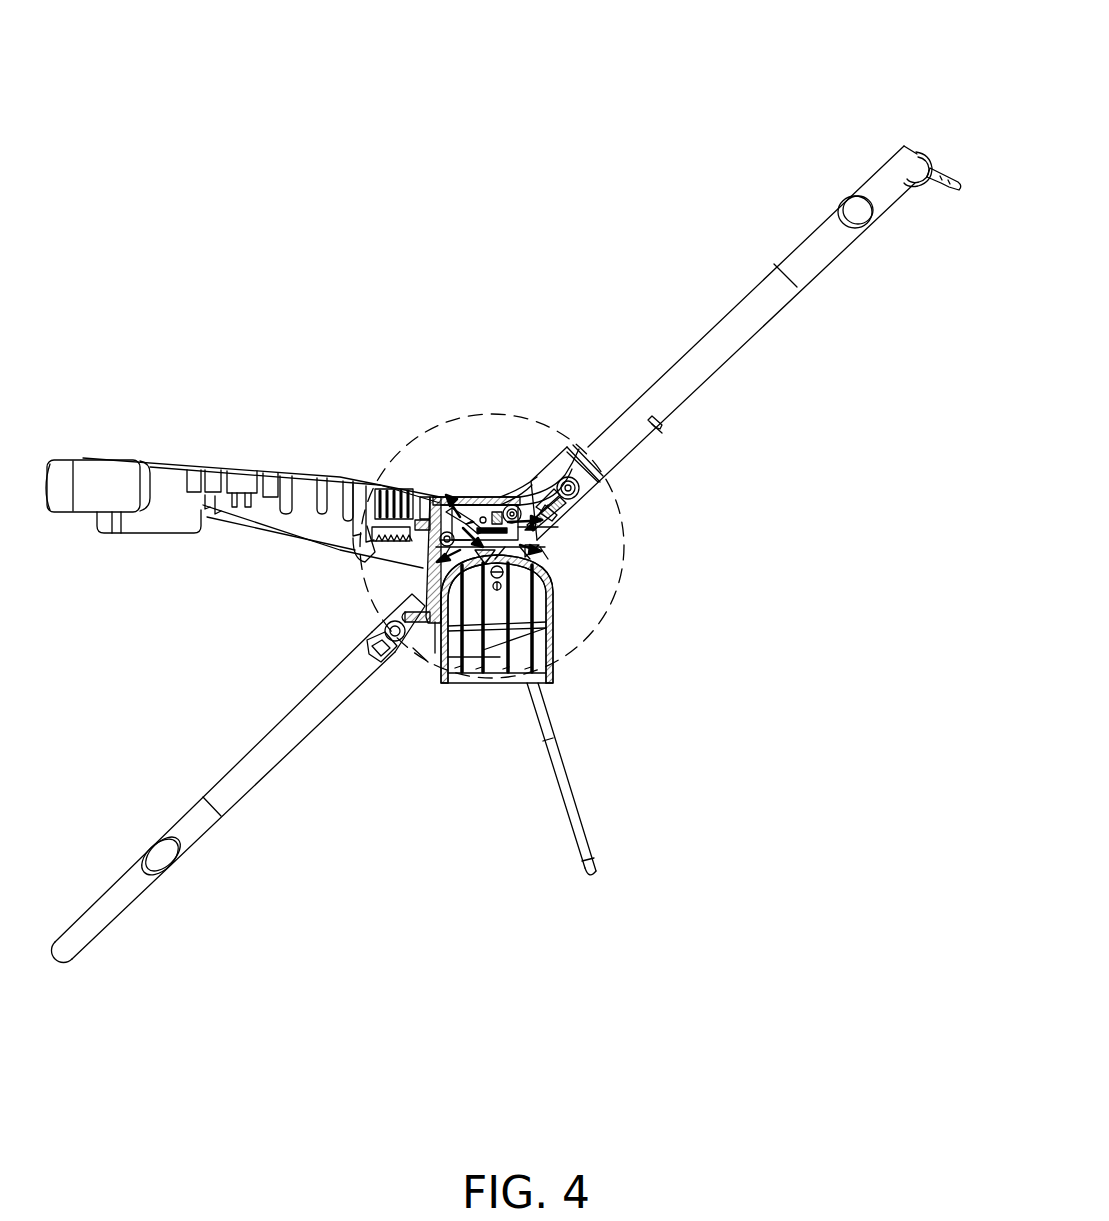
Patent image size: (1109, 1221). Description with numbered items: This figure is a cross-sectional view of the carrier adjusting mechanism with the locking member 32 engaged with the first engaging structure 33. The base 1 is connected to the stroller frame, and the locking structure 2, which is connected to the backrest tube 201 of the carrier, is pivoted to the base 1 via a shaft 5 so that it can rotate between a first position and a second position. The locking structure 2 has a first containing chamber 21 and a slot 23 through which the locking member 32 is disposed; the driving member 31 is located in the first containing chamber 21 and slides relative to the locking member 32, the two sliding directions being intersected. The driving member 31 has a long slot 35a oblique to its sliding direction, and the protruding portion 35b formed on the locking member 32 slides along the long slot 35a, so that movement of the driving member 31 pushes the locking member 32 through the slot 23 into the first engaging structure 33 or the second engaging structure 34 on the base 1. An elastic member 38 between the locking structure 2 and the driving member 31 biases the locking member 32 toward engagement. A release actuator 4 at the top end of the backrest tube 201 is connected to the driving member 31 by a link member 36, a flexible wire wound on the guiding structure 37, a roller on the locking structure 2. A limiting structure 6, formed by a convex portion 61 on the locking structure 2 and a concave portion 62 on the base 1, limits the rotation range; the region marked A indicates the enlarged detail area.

The base 1 is at (555, 642).
The locking structure 2 is at (447, 507).
The release actuator 4 is at (920, 150).
The backrest tube 201 is at (820, 243).
The first containing chamber 21 is at (547, 518).
The slot 23 is at (541, 538).
The driving member 31 is at (474, 520).
The locking member 32 is at (436, 546).
The first engaging structure 33 is at (437, 500).
The second engaging structure 34 is at (543, 545).
The long slot 35a is at (452, 498).
The protruding portion 35b is at (465, 510).
The link member 36 is at (598, 443).
The guiding structure 37 is at (513, 505).
The elastic member 38 is at (495, 515).
The shaft 5 is at (549, 588).
The limiting structure 6 is at (293, 641).
The convex portion 61 is at (430, 590).
The concave portion 62 is at (427, 567).
The detail region A is at (421, 654).